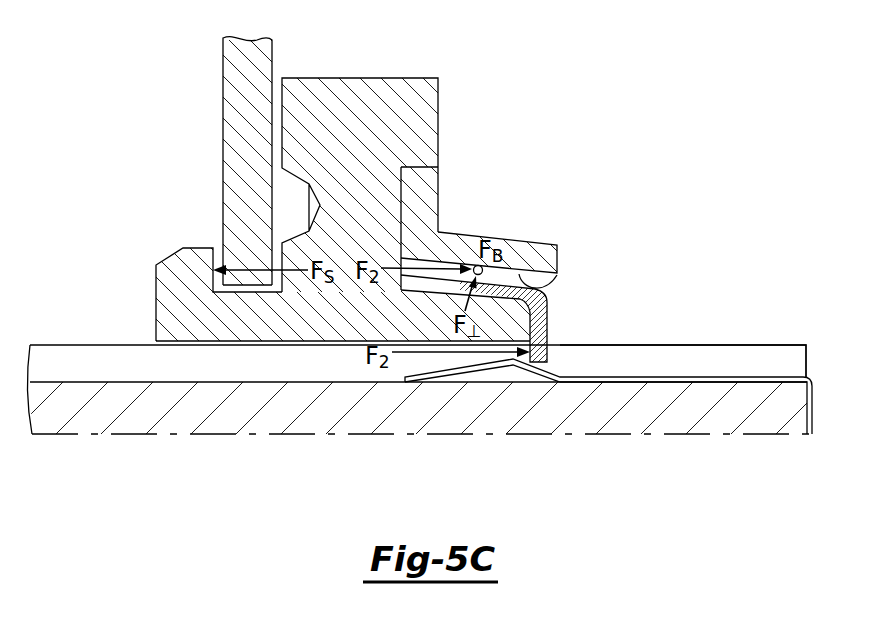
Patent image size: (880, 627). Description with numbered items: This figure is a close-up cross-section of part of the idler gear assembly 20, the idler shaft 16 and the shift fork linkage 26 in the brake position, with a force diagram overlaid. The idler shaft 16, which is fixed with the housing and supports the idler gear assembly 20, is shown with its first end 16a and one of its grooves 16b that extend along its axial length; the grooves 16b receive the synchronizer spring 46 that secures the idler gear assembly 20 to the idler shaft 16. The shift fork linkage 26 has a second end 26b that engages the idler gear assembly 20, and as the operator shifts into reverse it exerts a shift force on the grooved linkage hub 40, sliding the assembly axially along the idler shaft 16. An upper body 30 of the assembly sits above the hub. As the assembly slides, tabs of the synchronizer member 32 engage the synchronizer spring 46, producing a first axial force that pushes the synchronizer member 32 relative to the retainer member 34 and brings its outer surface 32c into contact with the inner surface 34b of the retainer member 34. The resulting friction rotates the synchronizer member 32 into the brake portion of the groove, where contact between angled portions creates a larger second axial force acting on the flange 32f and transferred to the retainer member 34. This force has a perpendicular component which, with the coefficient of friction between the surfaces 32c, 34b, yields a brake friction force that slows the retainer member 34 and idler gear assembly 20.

The idler gear assembly 20 is at (551, 125).
The shift fork linkage 26 is at (222, 161).
The second end 26b is at (245, 262).
The clamp block 30 is at (363, 82).
The grooved linkage hub 40 is at (177, 298).
The retainer member 34 is at (511, 227).
The inner surface 34b is at (542, 283).
The synchronizer member 32 is at (519, 277).
The outer surface 32c is at (470, 264).
The plate flange 32f is at (548, 360).
The idler shaft 16 is at (419, 350).
The first end 16a is at (777, 355).
The grooves 16b is at (47, 360).
The synchronizer spring 46 is at (688, 375).